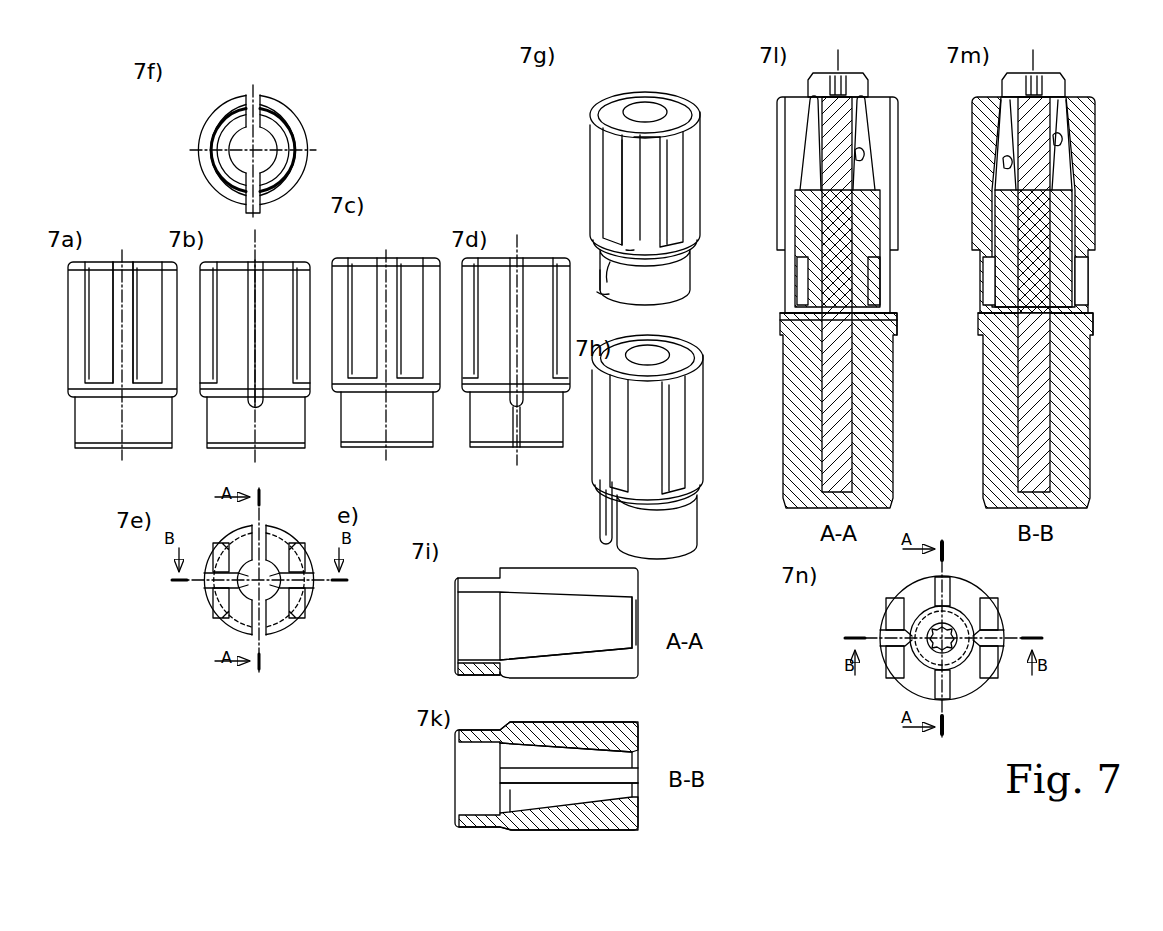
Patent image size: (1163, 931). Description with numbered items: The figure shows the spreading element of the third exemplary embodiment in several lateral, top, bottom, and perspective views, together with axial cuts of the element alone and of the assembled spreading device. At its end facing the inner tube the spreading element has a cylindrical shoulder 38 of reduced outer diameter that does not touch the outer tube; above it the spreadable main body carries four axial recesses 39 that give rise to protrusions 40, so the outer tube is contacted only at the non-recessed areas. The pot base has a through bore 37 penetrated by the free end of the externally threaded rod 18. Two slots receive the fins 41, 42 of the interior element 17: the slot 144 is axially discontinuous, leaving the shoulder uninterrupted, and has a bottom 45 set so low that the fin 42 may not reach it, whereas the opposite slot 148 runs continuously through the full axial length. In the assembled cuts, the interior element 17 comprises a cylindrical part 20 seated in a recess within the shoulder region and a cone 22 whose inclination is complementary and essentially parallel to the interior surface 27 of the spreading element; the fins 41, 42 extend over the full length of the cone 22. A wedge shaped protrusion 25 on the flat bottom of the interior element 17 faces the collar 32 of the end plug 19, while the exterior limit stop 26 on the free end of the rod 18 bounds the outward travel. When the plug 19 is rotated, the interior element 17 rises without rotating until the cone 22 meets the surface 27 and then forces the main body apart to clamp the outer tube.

The interior element 17 is at (866, 237).
The externally threaded rod 18 is at (840, 120).
The end plug 19 is at (990, 412).
The cylindrical part 20 is at (870, 288).
The cone 22 is at (1072, 210).
The wedge shaped protrusion 25 is at (805, 312).
The exterior limit stop 26 is at (848, 75).
The interior surface 27 is at (862, 158).
The collar 32 is at (975, 325).
The through bore 37 is at (278, 137).
The cylindrical shoulder 38 is at (297, 105).
The axial recesses 39 is at (145, 280).
The protrusions 40 is at (118, 285).
The fin 41 is at (788, 205).
The fin 42 is at (867, 210).
The bottom 45 is at (255, 405).
The slot 144 is at (258, 395).
The axially continuous slot 148 is at (243, 210).